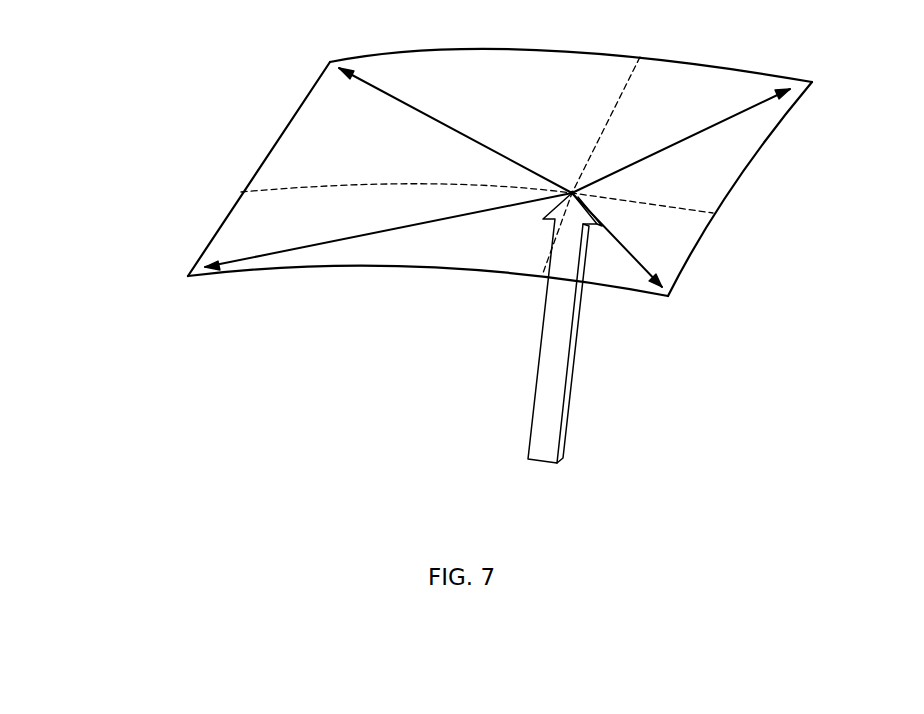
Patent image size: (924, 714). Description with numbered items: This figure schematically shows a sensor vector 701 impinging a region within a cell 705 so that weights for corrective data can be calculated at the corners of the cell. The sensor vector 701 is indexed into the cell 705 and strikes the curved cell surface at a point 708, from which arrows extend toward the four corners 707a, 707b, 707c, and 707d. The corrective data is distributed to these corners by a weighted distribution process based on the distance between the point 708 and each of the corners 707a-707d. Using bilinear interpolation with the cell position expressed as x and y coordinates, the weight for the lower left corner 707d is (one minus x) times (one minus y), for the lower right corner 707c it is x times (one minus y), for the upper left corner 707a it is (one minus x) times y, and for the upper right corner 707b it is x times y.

The sensor vector 701 is at (539, 373).
The cell 705 is at (252, 165).
The upper left corner 707a is at (330, 62).
The upper right corner 707b is at (812, 82).
The lower right corner 707c is at (668, 296).
The lower left corner 707d is at (188, 276).
The point 708 is at (572, 192).